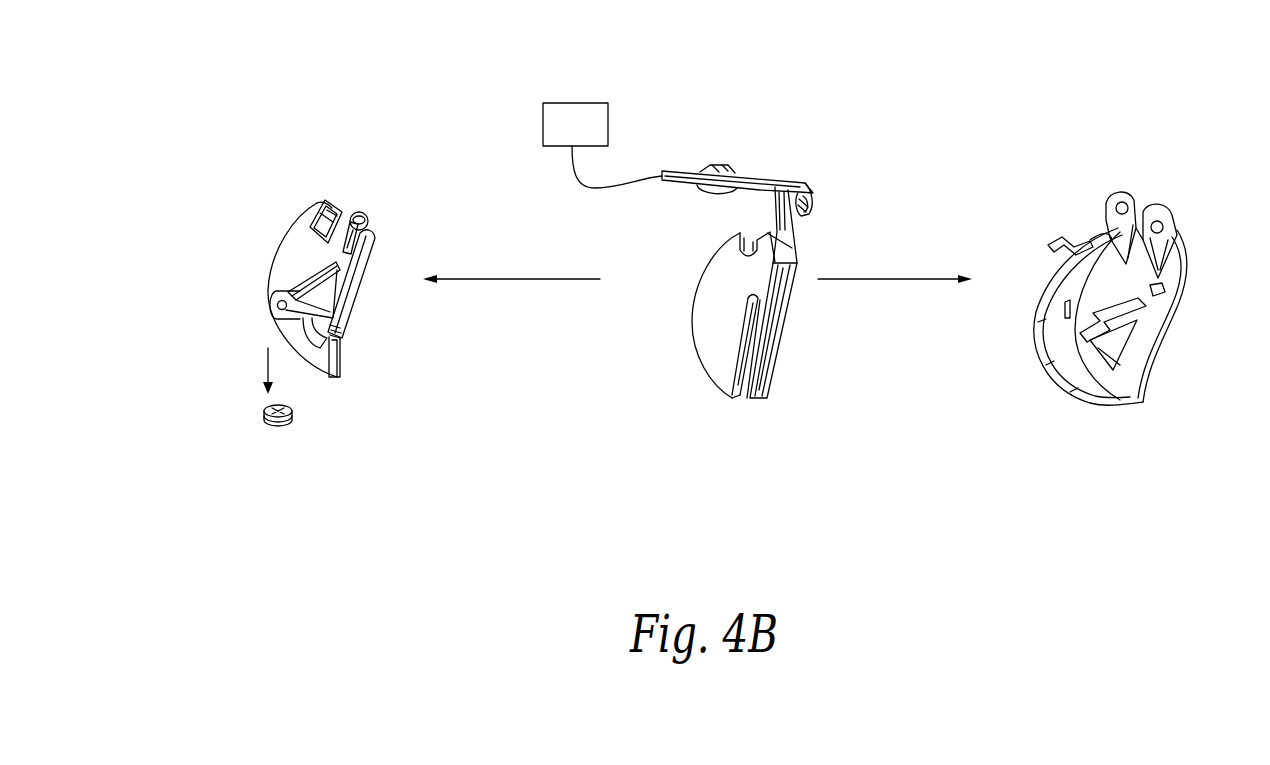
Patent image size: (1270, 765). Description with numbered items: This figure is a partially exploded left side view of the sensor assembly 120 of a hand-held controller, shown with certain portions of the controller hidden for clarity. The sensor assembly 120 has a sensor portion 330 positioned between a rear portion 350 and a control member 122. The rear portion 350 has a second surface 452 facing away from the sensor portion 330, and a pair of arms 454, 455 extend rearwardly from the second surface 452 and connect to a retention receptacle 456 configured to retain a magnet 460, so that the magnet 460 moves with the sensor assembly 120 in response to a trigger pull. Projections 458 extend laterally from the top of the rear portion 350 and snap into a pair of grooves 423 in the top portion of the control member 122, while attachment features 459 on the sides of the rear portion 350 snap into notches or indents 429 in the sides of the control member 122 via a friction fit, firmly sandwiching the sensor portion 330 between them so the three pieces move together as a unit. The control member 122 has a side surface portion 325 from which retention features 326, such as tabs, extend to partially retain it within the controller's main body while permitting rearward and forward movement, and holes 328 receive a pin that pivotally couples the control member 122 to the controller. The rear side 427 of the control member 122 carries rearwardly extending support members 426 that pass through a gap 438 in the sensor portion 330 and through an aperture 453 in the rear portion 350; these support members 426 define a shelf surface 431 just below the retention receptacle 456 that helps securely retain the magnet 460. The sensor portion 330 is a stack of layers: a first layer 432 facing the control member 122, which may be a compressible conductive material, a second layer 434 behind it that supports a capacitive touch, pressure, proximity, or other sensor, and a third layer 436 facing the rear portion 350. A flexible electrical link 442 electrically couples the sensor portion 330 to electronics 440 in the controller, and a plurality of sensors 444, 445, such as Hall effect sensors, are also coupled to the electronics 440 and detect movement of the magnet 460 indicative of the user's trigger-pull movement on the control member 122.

The sensor assembly 120 is at (237, 122).
The rear portion 350 is at (287, 215).
The second surface 452 is at (288, 243).
The arm 455 is at (305, 278).
The retention receptacle 456 is at (270, 302).
The arm 454 is at (307, 316).
The projections 458 is at (328, 205).
The attachment features 459 is at (344, 335).
The aperture 453 is at (336, 375).
The magnet 460 is at (262, 418).
The electronics 440 is at (575, 103).
The sensor 445 is at (715, 164).
The sensor 444 is at (820, 205).
The flexible electrical link 442 is at (772, 226).
The third layer 436 is at (720, 306).
The first layer 432 is at (797, 290).
The second layer 434 is at (770, 326).
The gap 438 is at (742, 382).
The sensor portion 330 is at (683, 368).
The control member 122 is at (1188, 207).
The side surface portion 325 is at (1120, 400).
The retention features 326 is at (1057, 240).
The holes 328 is at (1118, 205).
The grooves 423 is at (1105, 237).
The rear side 427 is at (1060, 277).
The support members 426 is at (1110, 312).
The indents 429 is at (1065, 315).
The shelf surface 431 is at (1033, 335).